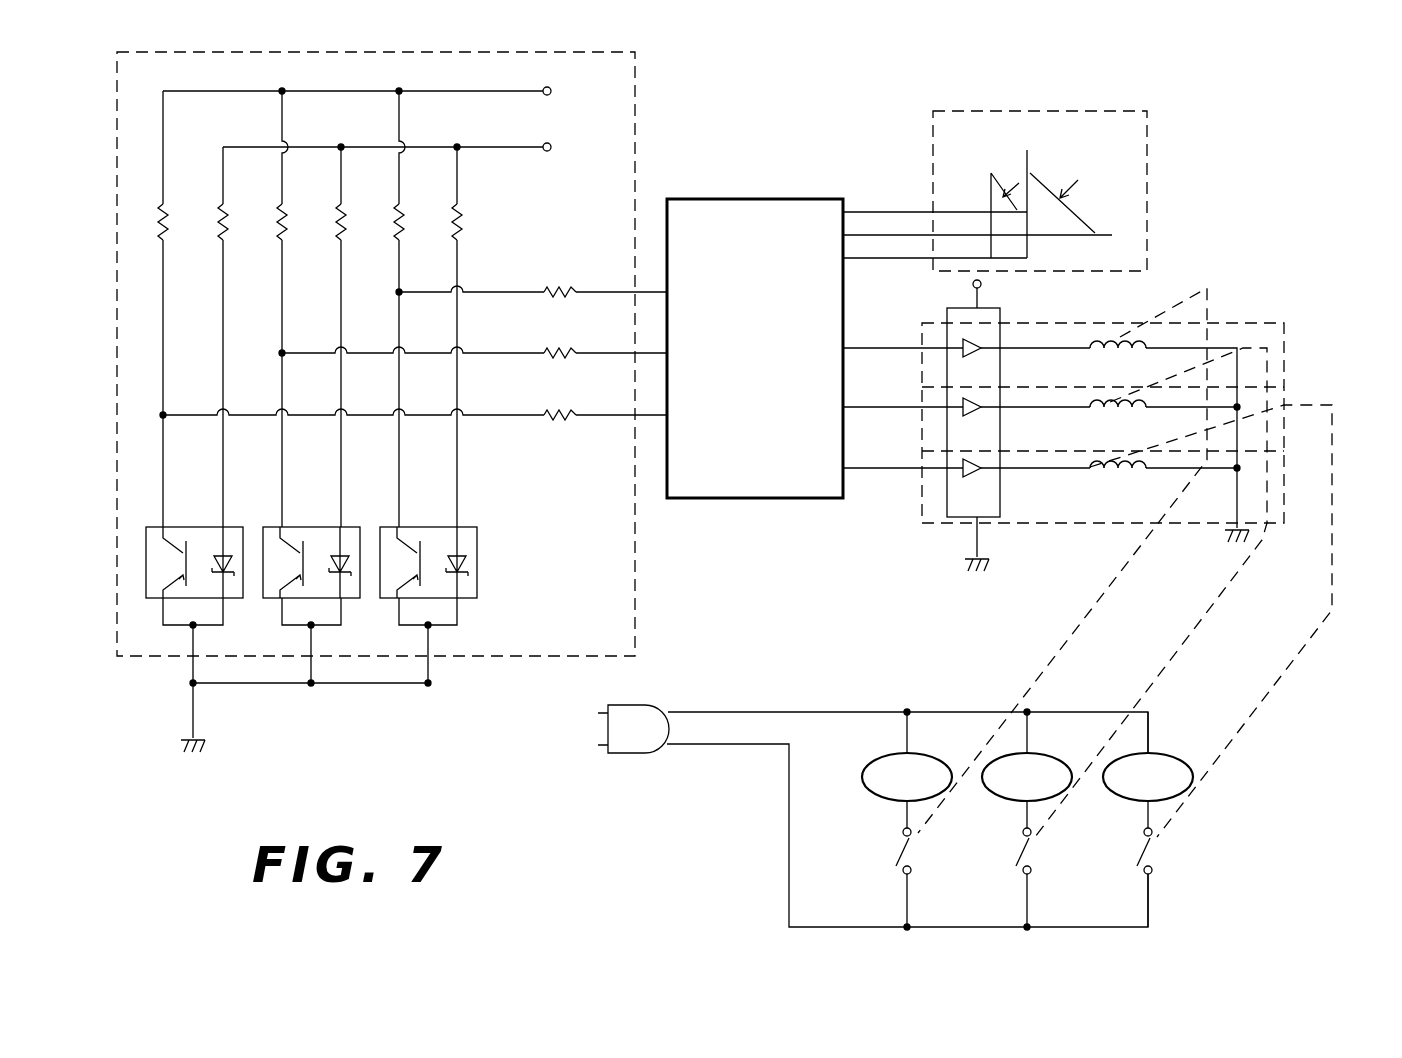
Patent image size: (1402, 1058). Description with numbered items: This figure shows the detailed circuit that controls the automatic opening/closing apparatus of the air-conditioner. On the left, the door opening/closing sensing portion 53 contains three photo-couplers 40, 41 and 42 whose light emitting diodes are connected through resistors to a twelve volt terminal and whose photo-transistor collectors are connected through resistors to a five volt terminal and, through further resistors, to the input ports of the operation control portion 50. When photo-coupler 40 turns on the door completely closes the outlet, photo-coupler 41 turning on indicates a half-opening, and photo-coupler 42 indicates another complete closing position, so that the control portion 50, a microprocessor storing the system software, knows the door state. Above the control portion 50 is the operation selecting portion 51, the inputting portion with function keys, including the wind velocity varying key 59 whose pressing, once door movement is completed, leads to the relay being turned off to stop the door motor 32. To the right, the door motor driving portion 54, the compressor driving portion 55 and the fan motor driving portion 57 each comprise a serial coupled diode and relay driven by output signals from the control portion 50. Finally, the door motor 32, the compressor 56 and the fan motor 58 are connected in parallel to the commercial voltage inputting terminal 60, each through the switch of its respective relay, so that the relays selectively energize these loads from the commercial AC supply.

The door opening/closing sensing portion 53 is at (635, 140).
The operation control portion 50 is at (805, 199).
The wind velocity varying key 59 is at (995, 188).
The operation selecting portion 51 is at (1089, 157).
The door motor driving portion 54 is at (1103, 435).
The compressor driving portion 55 is at (1284, 405).
The fan motor driving portion 57 is at (1283, 493).
The photo-coupler 42 is at (245, 527).
The photo-coupler 41 is at (363, 527).
The photo-coupler 40 is at (477, 527).
The commercial voltage inputting terminal 60 is at (660, 705).
The door motor 32 is at (942, 775).
The compressor 56 is at (1068, 772).
The fan motor 58 is at (1190, 772).